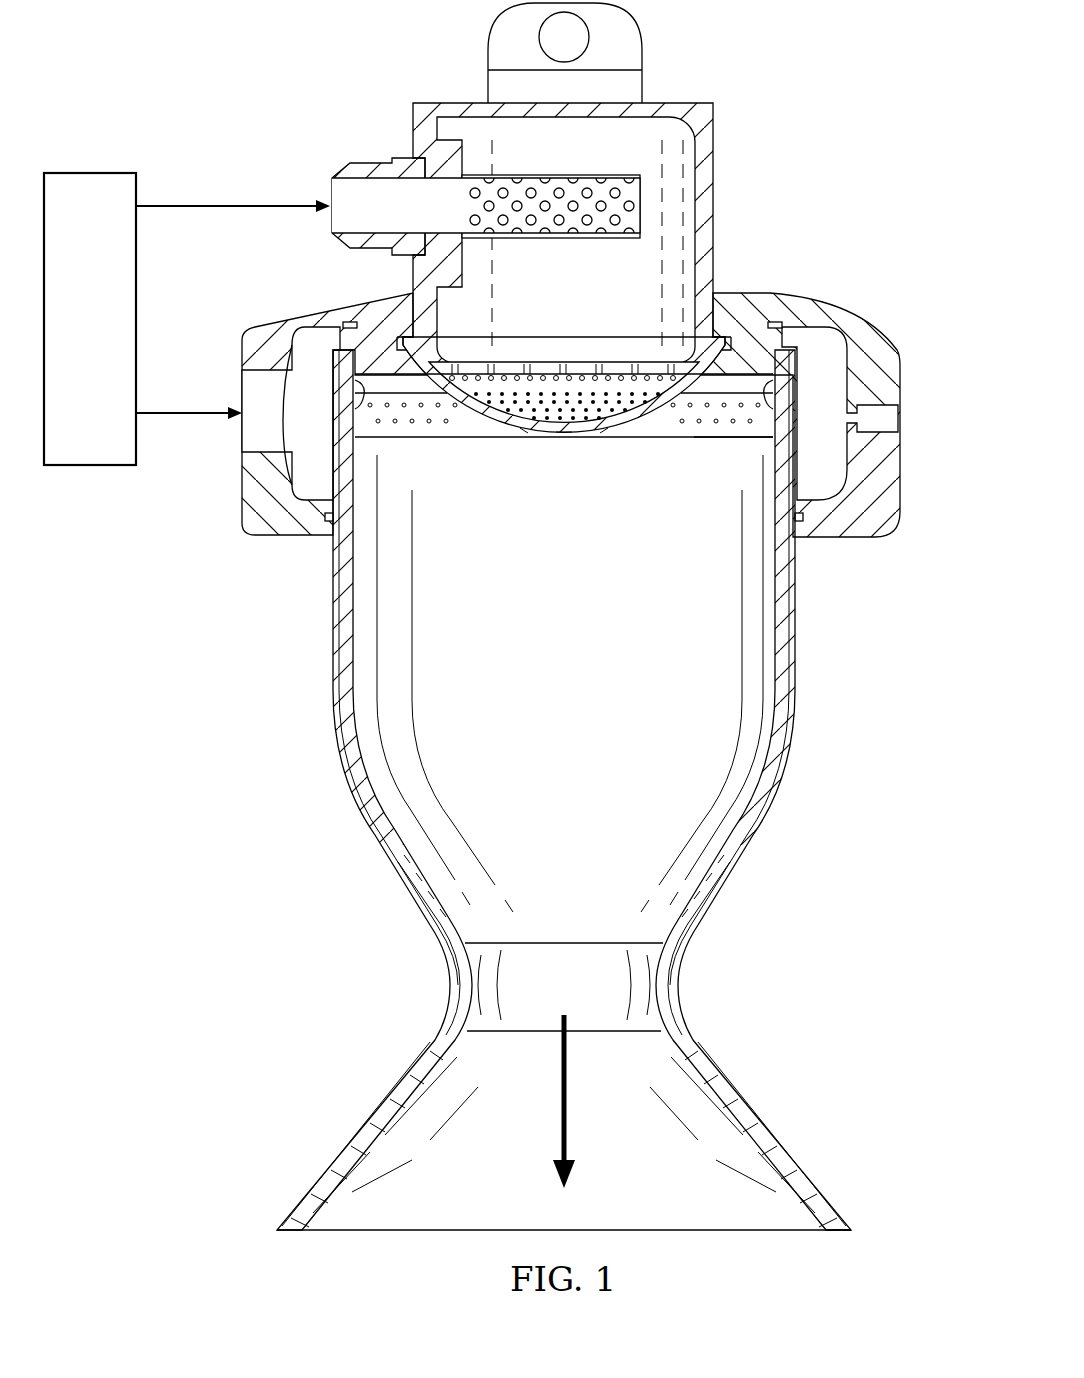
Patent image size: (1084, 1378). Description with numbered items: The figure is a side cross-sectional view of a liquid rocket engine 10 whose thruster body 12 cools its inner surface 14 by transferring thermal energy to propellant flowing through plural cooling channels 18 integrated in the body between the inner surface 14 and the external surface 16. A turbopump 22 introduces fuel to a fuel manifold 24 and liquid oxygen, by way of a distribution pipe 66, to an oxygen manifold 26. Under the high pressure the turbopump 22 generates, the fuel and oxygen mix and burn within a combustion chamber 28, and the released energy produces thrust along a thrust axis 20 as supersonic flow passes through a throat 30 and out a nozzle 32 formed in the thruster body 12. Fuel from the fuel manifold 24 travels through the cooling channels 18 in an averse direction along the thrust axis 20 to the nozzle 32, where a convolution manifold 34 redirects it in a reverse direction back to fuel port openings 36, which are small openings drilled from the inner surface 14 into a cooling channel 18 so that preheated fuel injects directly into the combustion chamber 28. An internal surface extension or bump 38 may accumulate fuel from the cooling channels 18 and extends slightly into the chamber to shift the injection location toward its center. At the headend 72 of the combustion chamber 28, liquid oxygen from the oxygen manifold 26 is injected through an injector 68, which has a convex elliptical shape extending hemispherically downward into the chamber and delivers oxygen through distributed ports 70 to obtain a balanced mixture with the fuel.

The liquid rocket engine 10 is at (569, 648).
The thruster body 12 is at (555, 790).
The inner surface 14 is at (358, 680).
The external surface 16 is at (338, 620).
The cooling channels 18 is at (398, 862).
The thrust axis 20 is at (567, 1087).
The turbopump 22 is at (90, 172).
The fuel manifold 24 is at (242, 472).
The oxygen manifold 26 is at (671, 132).
The combustion chamber 28 is at (579, 597).
The throat 30 is at (579, 985).
The nozzle 32 is at (465, 1166).
The convolution manifold 34 is at (831, 1226).
The fuel port openings 36 is at (710, 436).
The internal surface extension 38 is at (785, 408).
The distribution pipe 66 is at (340, 224).
The injector 68 is at (585, 386).
The distributed ports 70 is at (535, 436).
The headend 72 is at (758, 382).